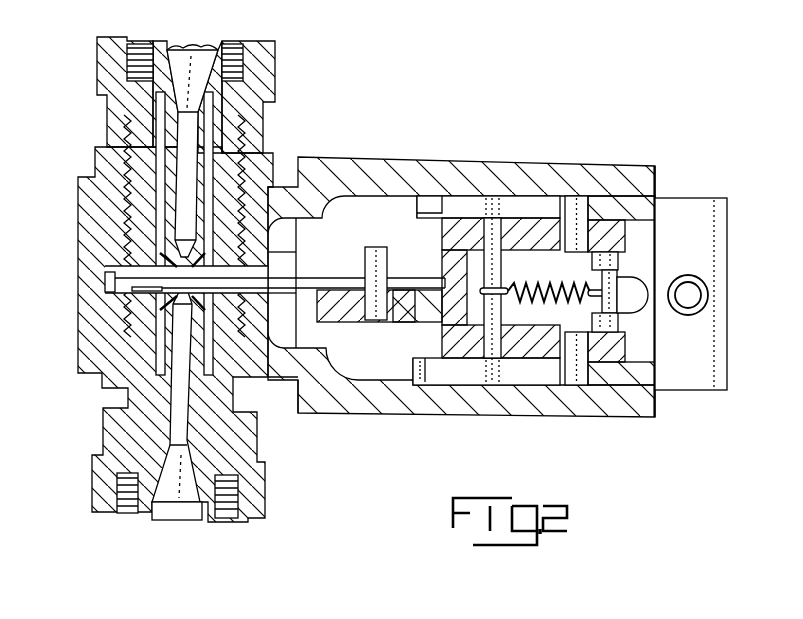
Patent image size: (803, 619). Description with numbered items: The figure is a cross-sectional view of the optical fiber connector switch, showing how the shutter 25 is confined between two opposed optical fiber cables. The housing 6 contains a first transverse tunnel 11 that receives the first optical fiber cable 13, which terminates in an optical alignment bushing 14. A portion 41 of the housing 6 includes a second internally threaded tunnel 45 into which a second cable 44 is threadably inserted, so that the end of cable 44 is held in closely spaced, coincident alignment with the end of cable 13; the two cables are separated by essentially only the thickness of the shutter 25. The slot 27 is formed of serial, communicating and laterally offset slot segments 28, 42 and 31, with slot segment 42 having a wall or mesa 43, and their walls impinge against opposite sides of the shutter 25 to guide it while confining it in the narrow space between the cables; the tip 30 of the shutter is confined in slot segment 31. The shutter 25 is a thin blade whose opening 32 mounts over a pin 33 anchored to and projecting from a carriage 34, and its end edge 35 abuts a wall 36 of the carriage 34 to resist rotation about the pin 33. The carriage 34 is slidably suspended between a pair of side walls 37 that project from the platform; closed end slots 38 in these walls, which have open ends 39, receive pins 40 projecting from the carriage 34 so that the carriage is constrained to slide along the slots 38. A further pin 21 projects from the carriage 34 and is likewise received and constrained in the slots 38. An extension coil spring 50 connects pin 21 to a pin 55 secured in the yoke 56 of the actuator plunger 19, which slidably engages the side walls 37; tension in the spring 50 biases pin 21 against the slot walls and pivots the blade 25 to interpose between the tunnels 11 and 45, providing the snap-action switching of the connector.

The housing 6 is at (97, 188).
The first transverse tunnel 11 is at (113, 207).
The optical fiber cable 13 is at (188, 45).
The optical alignment bushing 14 is at (158, 147).
The actuator plunger 19 is at (705, 251).
The pin 21 is at (486, 386).
The shutter 25 is at (305, 312).
The slot 27 is at (268, 252).
The slot segment 28 is at (270, 277).
The tip 30 is at (112, 272).
The slot segment 31 is at (113, 289).
The opening 32 is at (410, 287).
The pin 33 is at (377, 257).
The carriage 34 is at (517, 232).
The end edge 35 is at (420, 325).
The wall 36 is at (444, 296).
The side wall 37 is at (640, 212).
The closed end slot 38 is at (455, 200).
The open end 39 is at (425, 205).
The pin 40 is at (577, 195).
The portion of housing 41 is at (271, 380).
The slot segment 42 is at (112, 267).
The mesa 43 is at (215, 250).
The second cable 44 is at (171, 520).
The second internally threaded tunnel 45 is at (153, 377).
The extension coil spring 50 is at (572, 305).
The pin 55 is at (655, 331).
The yoke 56 is at (632, 262).